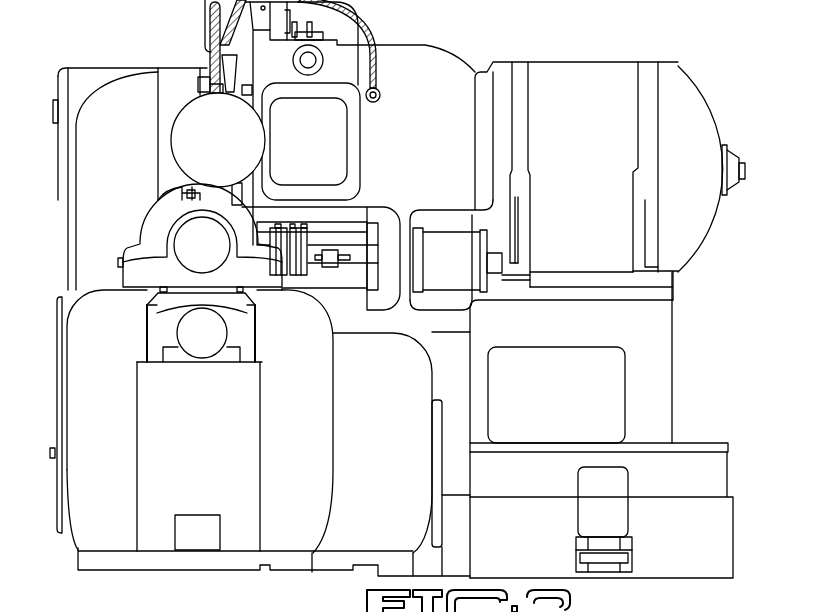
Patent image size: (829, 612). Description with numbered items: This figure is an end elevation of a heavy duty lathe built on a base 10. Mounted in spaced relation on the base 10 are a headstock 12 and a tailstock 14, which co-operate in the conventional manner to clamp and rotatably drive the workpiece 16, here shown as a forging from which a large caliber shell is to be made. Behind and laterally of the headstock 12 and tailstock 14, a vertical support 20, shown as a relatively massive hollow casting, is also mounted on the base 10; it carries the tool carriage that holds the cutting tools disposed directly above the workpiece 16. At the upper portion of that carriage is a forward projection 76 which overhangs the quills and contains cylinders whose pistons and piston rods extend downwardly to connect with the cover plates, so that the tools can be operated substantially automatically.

The base 10 is at (82, 412).
The headstock 12 is at (113, 87).
The tailstock 14 is at (188, 230).
The workpiece 16 is at (247, 138).
The vertical support 20 is at (445, 58).
The forward projection 76 is at (206, 18).